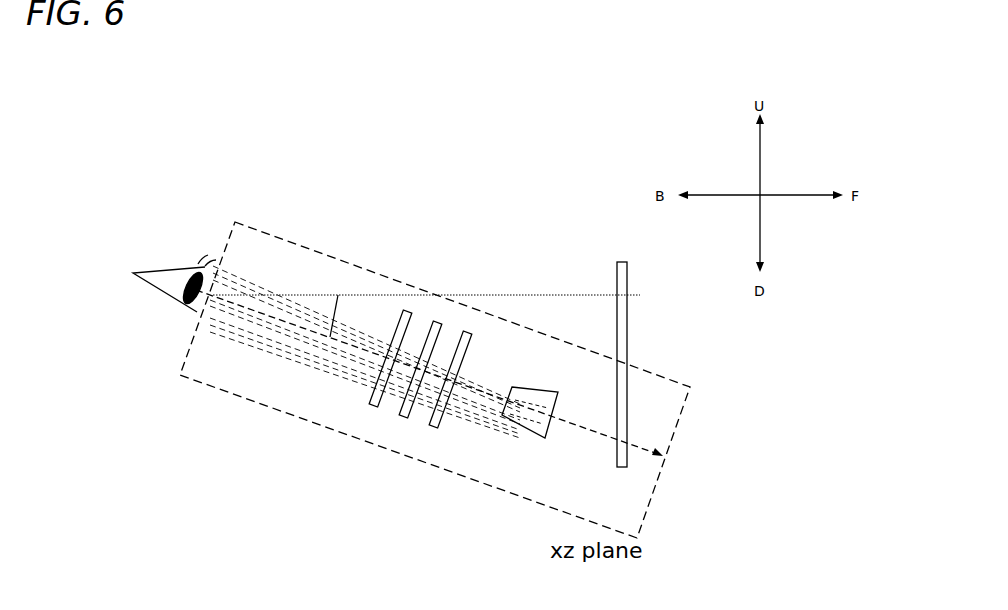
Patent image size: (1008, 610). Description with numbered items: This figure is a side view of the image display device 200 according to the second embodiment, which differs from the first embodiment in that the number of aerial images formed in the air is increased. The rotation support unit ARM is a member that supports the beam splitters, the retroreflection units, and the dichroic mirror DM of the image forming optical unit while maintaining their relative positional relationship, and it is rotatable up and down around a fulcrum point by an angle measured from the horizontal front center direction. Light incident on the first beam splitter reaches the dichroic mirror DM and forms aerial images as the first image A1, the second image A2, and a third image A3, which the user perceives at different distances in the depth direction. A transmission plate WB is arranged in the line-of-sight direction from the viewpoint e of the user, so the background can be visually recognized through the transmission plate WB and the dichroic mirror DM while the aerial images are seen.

The image display device 200 is at (305, 194).
The viewpoint e is at (175, 268).
The rotation support unit ARM is at (219, 385).
The first image A1 is at (446, 393).
The second image A2 is at (413, 383).
The third image A3 is at (384, 371).
The dichroic mirror DM is at (535, 400).
The transmission plate WB is at (625, 349).